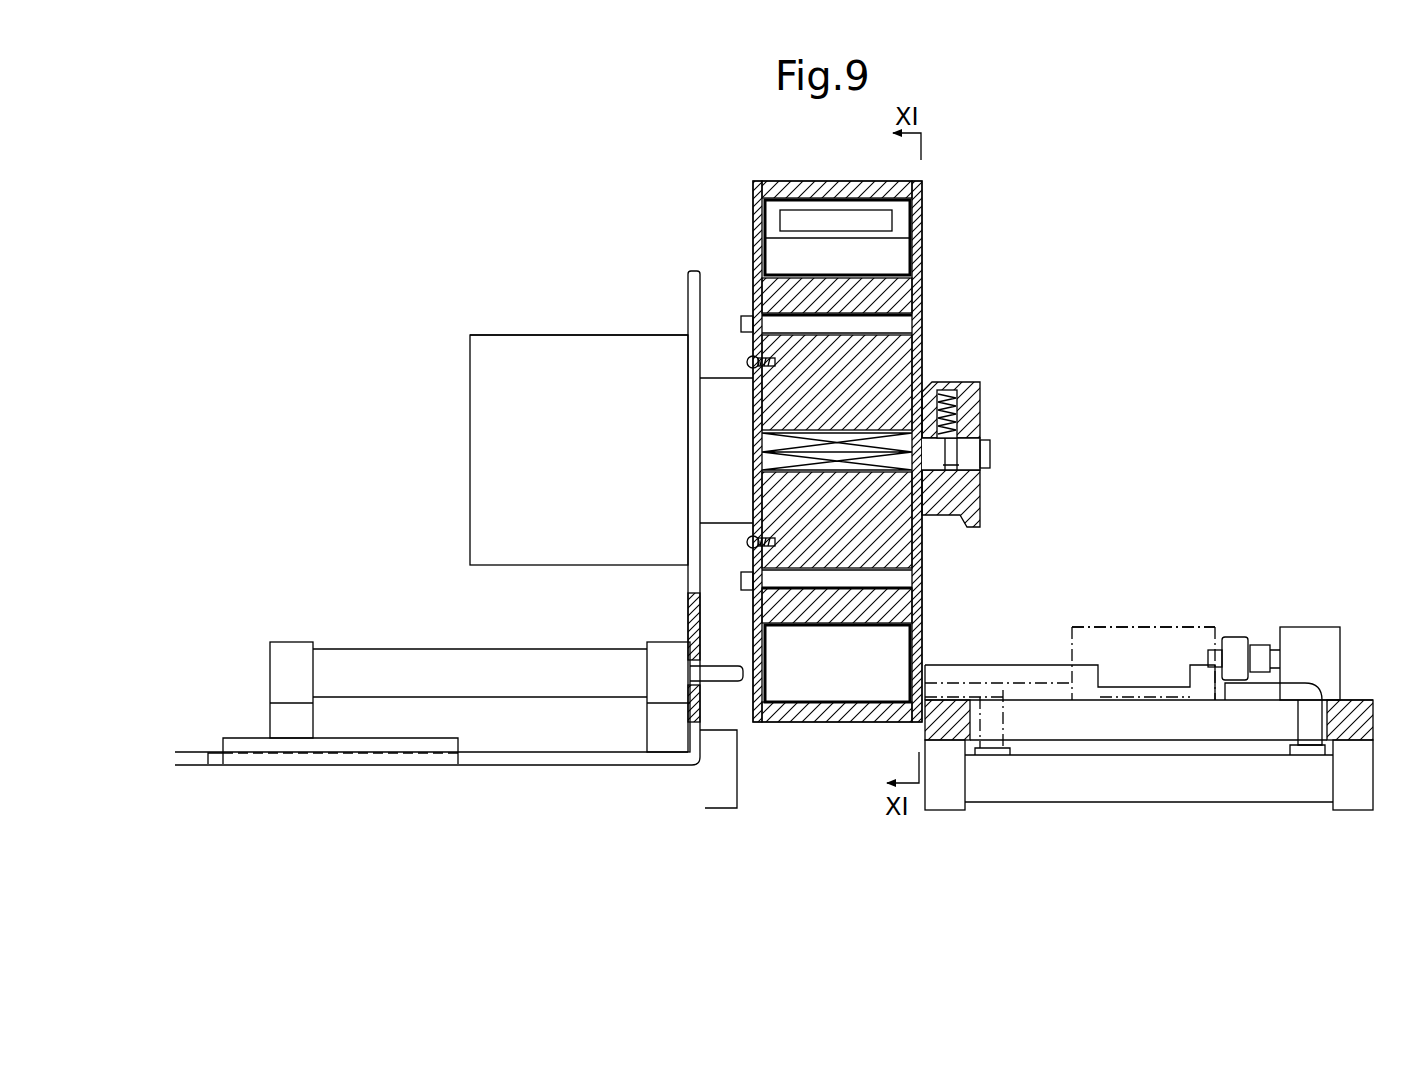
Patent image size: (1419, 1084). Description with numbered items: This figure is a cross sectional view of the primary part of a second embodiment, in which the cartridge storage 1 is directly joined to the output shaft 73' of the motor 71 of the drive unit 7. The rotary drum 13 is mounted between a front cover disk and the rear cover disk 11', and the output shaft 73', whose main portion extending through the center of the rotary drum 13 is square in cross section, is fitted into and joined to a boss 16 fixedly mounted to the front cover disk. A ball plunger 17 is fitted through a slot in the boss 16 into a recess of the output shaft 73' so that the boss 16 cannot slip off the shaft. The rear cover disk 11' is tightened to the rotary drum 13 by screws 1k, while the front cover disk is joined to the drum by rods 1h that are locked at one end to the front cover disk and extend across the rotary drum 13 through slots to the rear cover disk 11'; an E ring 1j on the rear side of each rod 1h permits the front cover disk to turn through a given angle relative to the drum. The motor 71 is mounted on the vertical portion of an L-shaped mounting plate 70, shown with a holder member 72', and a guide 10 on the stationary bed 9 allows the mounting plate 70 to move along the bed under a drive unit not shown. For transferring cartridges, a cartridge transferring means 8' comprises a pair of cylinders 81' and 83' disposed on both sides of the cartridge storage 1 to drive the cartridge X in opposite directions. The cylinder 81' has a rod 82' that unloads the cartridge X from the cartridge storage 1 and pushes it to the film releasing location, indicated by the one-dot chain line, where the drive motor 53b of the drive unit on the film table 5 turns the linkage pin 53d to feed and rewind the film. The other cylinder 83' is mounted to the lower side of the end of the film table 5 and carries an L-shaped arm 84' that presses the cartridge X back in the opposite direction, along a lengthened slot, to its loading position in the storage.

The cartridge storage 1 is at (745, 188).
The rear cover disk 11' is at (801, 451).
The rotary drum 13 is at (822, 182).
The rod 1h is at (908, 300).
The E ring 1j is at (745, 318).
The screw 1k is at (747, 360).
The boss 16 is at (975, 405).
The ball plunger 17 is at (945, 390).
The output shaft 73' is at (1012, 451).
The drive unit 7 is at (597, 275).
The L-shaped mounting plate 70 is at (692, 297).
The motor 71 is at (572, 352).
The holder member 72' is at (594, 450).
The cartridge transferring means 8' is at (494, 673).
The cylinder 81' is at (480, 658).
The rod 82' is at (747, 731).
The guide 10 is at (235, 742).
The stationary bed 9 is at (715, 808).
The film table 5 is at (1345, 700).
The L-shaped arm 84' is at (1149, 775).
The cylinder 83' is at (1149, 811).
The linkage pin 53d is at (1220, 640).
The drive motor 53b is at (1318, 633).
The cartridge X is at (1128, 630).